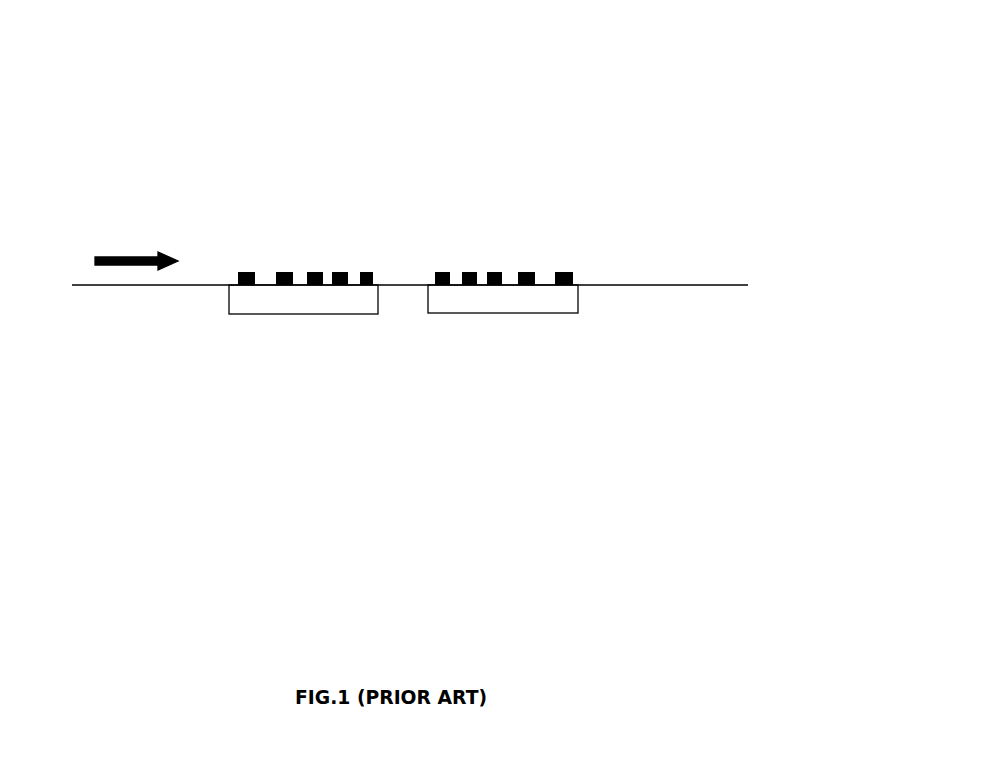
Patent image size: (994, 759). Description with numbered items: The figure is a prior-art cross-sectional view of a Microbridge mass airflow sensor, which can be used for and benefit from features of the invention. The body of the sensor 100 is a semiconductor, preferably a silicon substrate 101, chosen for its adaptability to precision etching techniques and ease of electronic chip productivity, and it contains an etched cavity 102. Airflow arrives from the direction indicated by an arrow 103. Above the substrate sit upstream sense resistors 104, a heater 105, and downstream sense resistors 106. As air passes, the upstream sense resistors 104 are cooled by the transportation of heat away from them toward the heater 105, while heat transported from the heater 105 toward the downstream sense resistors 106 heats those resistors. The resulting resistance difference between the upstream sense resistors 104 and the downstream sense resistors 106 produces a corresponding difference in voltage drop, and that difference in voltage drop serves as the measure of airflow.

The sensor 100 is at (578, 65).
The silicon substrate 101 is at (70, 460).
The etched cavity 102 is at (270, 413).
The arrow 103 is at (138, 253).
The upstream sense resistors 104 is at (245, 272).
The heater 105 is at (365, 270).
The downstream sense resistors 106 is at (563, 272).